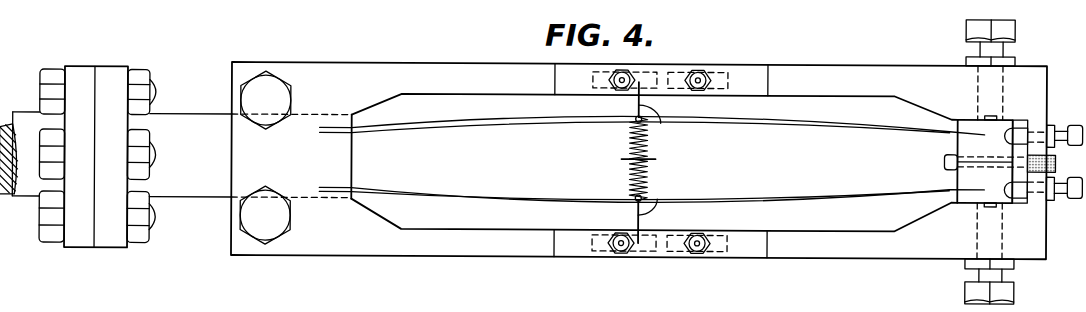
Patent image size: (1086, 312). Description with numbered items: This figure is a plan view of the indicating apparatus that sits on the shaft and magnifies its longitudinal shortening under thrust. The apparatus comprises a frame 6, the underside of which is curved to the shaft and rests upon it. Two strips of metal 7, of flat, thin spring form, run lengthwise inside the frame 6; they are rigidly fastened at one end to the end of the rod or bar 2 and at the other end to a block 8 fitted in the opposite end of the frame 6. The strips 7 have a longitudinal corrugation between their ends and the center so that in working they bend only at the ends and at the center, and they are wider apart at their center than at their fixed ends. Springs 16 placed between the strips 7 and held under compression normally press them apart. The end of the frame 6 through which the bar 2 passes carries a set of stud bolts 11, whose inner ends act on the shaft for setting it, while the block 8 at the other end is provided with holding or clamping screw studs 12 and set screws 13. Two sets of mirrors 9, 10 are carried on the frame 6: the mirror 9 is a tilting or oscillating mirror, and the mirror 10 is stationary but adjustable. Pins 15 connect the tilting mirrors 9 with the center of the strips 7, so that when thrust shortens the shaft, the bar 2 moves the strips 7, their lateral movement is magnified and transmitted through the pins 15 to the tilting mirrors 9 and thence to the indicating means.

The rod or bar 2 is at (32, 122).
The frame 6 is at (318, 72).
The strips of metal 7 is at (479, 131).
The block 8 is at (997, 131).
The tilting or oscillating mirror 9 is at (595, 78).
The stationary adjustable mirror 10 is at (712, 75).
The stud bolts 11 is at (262, 85).
The holding or clamping screw studs 12 is at (1013, 30).
The set screws 13 is at (1077, 142).
The pins 15 is at (661, 121).
The springs 16 is at (630, 141).